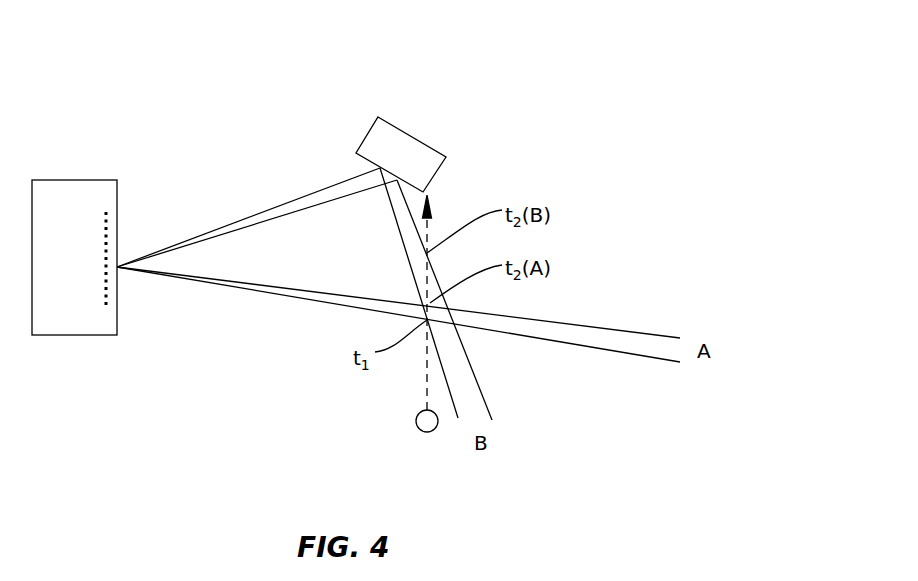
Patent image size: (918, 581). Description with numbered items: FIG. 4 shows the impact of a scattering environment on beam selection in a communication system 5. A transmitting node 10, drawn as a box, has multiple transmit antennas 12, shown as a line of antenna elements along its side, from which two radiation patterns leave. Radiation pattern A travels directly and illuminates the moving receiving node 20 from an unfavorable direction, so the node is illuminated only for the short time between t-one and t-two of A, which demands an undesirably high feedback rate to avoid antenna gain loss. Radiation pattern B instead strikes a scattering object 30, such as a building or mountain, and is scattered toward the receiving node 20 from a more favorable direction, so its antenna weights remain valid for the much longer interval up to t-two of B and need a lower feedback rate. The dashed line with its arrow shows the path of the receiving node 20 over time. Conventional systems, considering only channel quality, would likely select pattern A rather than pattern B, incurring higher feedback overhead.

The communication system 5 is at (569, 61).
The transmitting node 10 is at (79, 263).
The transmit antennas 12 is at (106, 240).
The receiving node 20 is at (418, 430).
The scattering object 30 is at (420, 140).